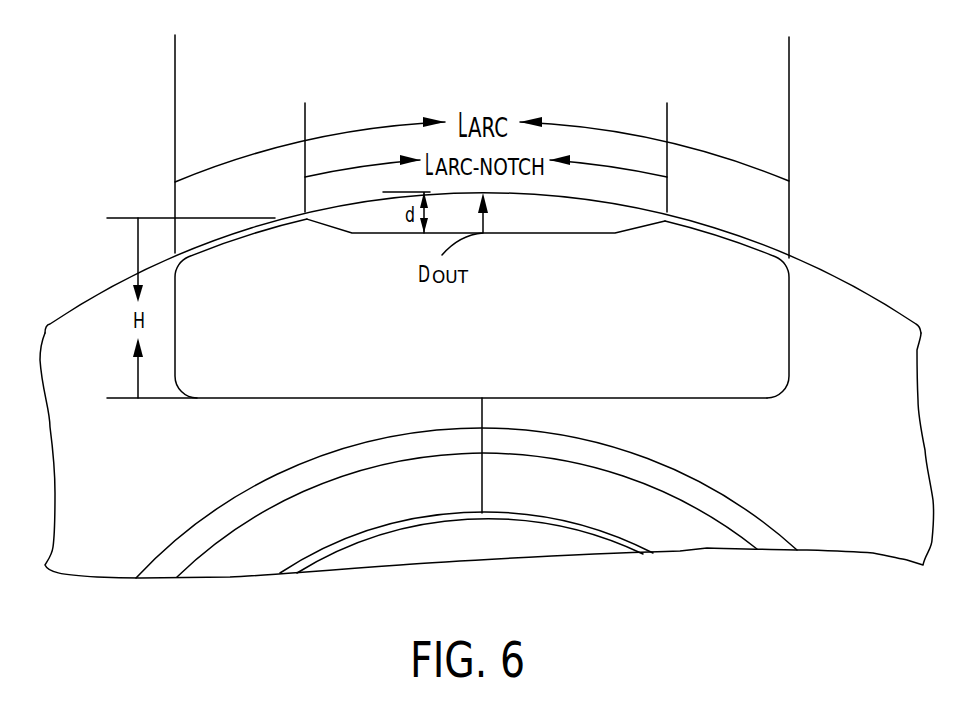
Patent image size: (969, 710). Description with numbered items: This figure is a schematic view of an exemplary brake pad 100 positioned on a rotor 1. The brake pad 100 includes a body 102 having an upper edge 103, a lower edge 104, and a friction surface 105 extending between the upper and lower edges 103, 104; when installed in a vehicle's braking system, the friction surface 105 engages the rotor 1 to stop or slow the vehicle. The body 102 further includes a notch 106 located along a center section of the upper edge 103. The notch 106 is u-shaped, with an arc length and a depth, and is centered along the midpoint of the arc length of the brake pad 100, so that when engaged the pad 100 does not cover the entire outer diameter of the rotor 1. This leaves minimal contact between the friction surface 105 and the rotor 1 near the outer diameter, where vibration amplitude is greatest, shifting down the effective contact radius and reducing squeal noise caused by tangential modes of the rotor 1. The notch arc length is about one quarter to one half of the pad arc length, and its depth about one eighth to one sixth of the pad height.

The brake pad 100 is at (822, 191).
The rotor 1 is at (823, 295).
The body 102 is at (792, 338).
The upper edge 103 is at (235, 234).
The lower edge 104 is at (243, 398).
The friction surface 105 is at (622, 318).
The notch 106 is at (567, 232).